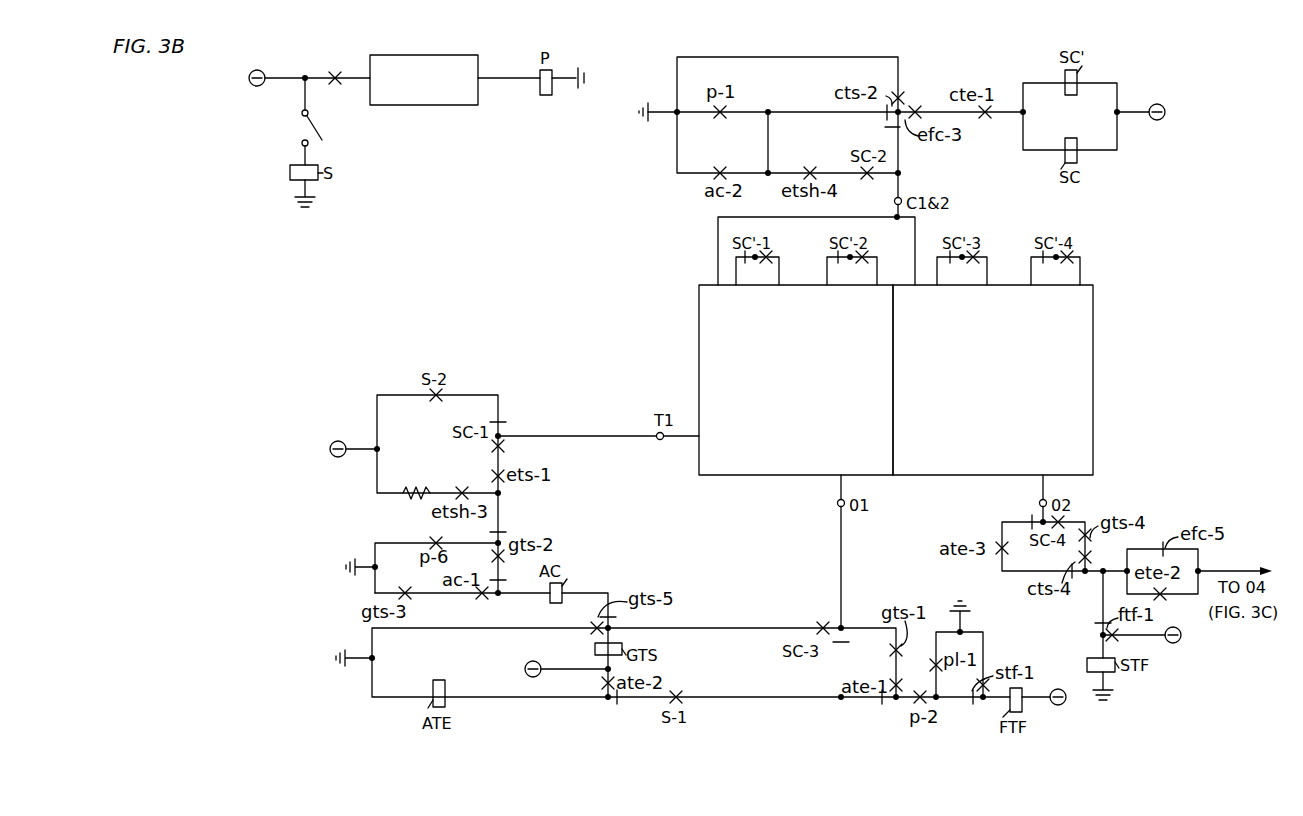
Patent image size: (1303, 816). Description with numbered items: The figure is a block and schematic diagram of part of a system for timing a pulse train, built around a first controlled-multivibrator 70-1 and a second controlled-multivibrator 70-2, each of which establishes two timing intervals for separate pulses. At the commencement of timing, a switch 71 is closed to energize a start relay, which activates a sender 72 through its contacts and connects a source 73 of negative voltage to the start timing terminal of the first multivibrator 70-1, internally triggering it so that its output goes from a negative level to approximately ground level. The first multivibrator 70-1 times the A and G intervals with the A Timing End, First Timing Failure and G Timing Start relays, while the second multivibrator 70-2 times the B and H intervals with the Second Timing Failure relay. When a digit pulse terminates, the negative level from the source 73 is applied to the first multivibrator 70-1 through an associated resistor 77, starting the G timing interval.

The sender 72 is at (473, 56).
The switch 71 is at (313, 137).
The source of negative voltage 73 is at (332, 442).
The resistor 77 is at (412, 500).
The first controlled-multivibrator 70-1 is at (699, 316).
The second controlled-multivibrator 70-2 is at (1093, 325).